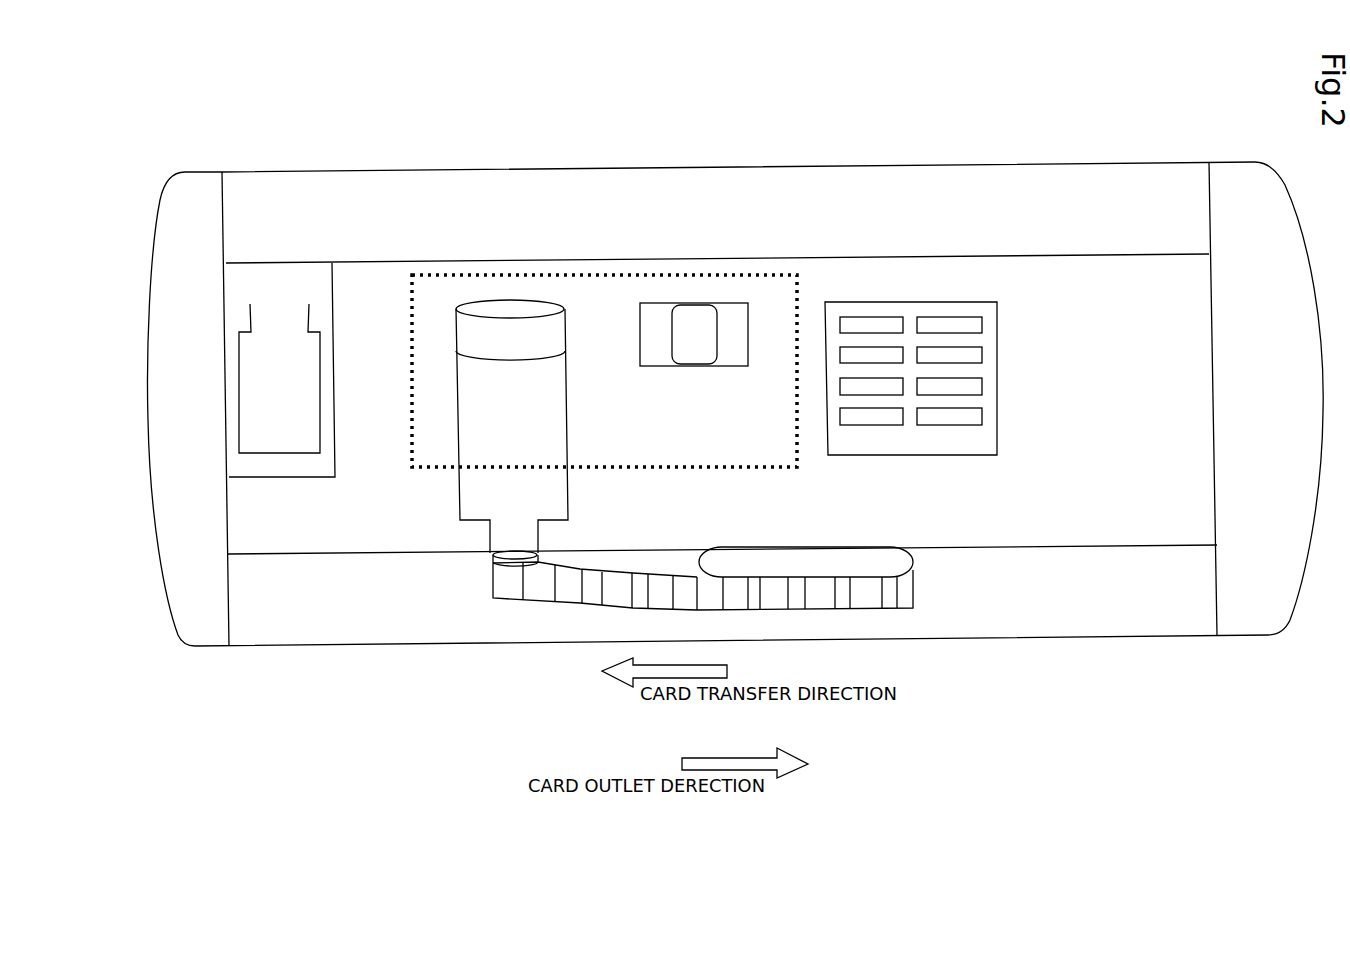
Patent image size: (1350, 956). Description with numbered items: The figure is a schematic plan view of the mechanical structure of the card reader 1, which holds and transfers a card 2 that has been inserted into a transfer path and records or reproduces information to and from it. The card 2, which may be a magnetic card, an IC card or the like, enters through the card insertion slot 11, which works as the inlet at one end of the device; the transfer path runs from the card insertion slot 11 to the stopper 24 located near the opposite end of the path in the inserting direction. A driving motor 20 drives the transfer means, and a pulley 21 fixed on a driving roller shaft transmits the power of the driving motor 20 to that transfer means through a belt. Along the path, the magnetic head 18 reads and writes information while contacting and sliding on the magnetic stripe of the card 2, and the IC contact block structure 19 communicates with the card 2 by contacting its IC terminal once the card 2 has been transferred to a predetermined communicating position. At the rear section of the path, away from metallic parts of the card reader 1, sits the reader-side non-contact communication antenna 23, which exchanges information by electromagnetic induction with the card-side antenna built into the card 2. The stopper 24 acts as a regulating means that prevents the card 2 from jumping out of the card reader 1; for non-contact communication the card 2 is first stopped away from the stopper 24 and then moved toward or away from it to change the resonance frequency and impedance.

The card reader 1 is at (480, 659).
The card 2 is at (576, 273).
The card insertion slot 11 is at (1214, 445).
The magnetic head 18 is at (700, 305).
The IC contact block structure 19 is at (916, 302).
The driving motor 20 is at (488, 415).
The pulley 21 is at (798, 562).
The reader-side non-contact communication antenna 23 is at (275, 463).
The stopper 24 is at (225, 387).